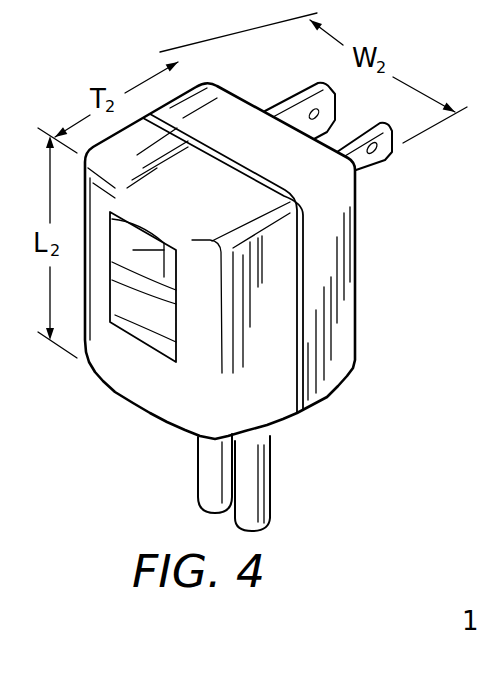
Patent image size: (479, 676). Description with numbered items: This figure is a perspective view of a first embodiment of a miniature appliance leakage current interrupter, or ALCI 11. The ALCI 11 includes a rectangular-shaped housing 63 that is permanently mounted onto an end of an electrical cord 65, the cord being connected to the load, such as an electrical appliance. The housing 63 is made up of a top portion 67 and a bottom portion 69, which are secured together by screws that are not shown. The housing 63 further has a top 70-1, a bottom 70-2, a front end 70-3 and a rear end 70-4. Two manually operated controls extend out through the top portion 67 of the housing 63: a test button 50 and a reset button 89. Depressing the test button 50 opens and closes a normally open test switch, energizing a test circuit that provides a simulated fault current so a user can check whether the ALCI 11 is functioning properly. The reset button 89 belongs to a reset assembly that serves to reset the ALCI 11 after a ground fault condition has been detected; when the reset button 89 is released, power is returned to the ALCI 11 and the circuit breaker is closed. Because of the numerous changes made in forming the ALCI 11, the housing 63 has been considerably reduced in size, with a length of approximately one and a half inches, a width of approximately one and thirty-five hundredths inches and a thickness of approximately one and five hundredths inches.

The appliance leakage current interrupter 11 is at (218, 46).
The housing 63 is at (368, 282).
The bottom portion 69 is at (343, 223).
The top 70-1 is at (100, 351).
The bottom 70-2 is at (358, 326).
The front end 70-3 is at (262, 157).
The rear end 70-4 is at (322, 397).
The reset button 89 is at (136, 256).
The test button 50 is at (136, 358).
The top portion 67 is at (182, 403).
The electrical cord 65 is at (253, 468).